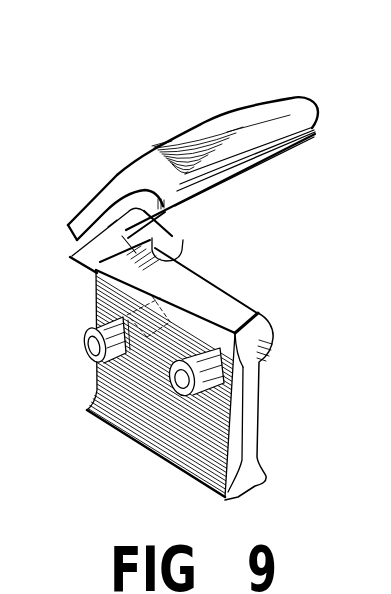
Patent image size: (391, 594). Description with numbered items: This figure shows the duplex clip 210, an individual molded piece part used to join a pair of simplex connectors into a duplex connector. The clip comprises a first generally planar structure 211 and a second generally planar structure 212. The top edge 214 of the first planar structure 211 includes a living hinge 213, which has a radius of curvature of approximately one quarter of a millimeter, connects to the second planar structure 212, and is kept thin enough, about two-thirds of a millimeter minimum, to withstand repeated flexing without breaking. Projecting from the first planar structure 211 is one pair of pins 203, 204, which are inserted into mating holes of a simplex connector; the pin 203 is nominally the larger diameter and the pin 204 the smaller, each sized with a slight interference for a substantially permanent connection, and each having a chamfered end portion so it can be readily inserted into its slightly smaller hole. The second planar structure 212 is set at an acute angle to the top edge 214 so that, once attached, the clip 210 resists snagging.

The duplex clip 210 is at (200, 272).
The first generally planar structure 211 is at (248, 420).
The second generally planar structure 212 is at (111, 178).
The living hinge 213 is at (175, 260).
The top edge 214 is at (226, 303).
The pin 203 is at (180, 380).
The pin 204 is at (90, 348).